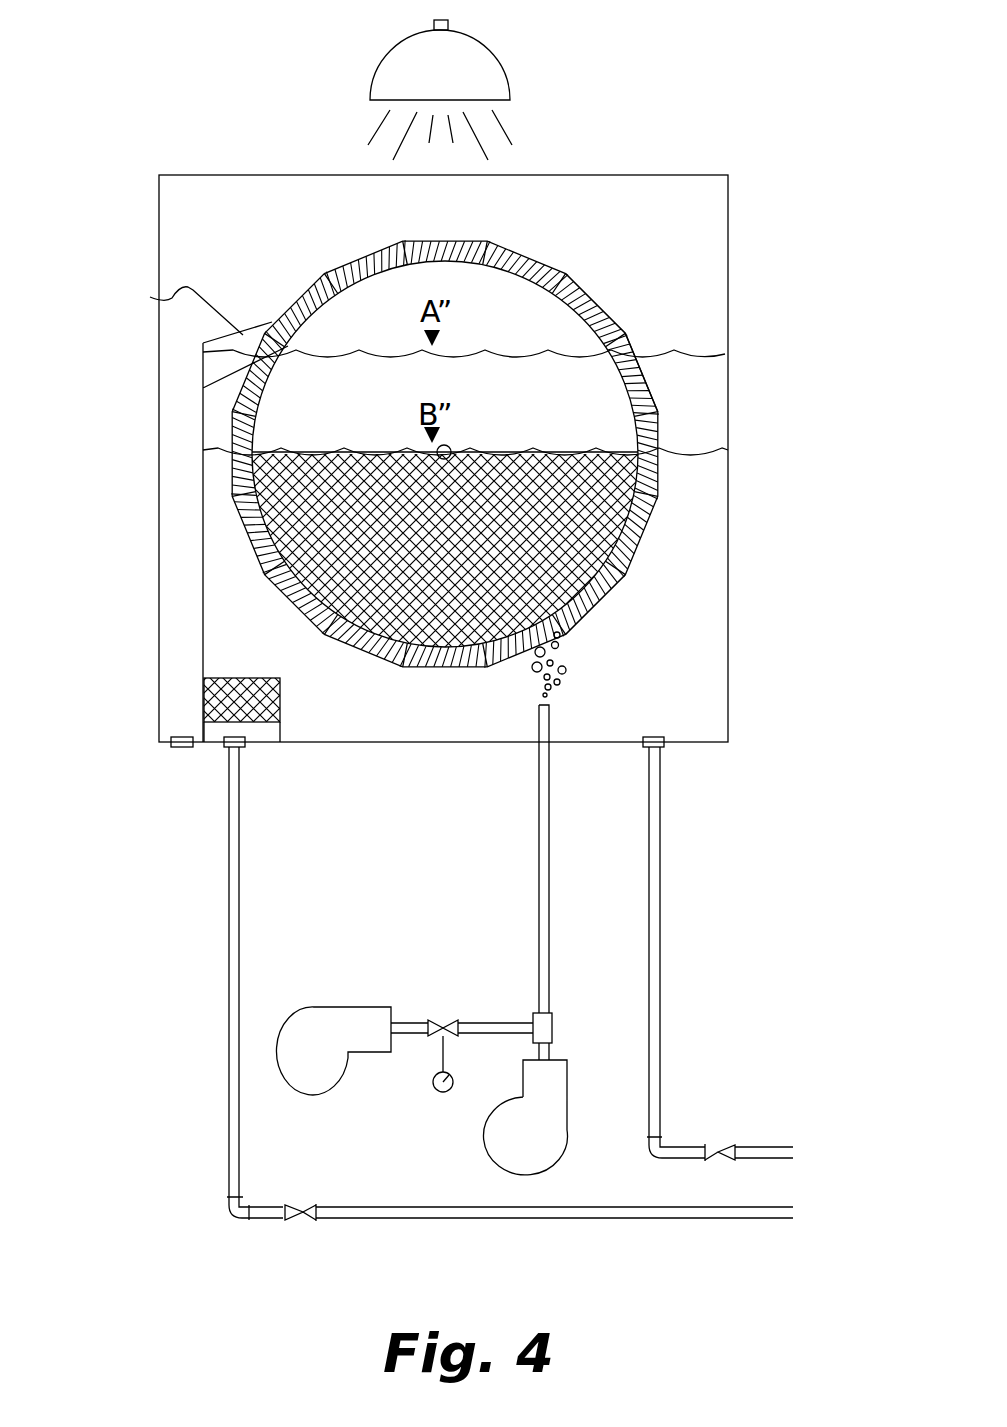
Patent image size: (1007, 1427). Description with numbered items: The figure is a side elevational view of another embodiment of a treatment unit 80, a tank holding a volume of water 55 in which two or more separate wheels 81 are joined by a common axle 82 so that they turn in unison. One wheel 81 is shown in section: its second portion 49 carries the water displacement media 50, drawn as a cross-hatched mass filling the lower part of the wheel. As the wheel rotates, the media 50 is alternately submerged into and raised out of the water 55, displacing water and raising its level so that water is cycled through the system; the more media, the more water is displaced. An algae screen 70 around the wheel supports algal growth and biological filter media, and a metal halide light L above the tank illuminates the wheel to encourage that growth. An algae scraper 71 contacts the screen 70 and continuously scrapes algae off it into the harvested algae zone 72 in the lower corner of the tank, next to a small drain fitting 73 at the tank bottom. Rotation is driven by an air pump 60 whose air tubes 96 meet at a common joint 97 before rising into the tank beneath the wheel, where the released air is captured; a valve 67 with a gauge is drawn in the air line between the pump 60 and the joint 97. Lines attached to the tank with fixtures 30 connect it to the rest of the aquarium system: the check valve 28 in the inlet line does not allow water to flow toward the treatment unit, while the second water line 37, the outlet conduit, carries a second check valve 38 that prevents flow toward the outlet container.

The metal halide light L is at (516, 42).
The treatment unit 80 is at (728, 252).
The axle 82 is at (521, 422).
The algae screen 70 is at (530, 260).
The wheel 81 is at (585, 292).
The second portion 49 is at (583, 548).
The water displacement media 50 is at (457, 544).
The algae scraper 71 is at (150, 297).
The harvested algae zone 72 is at (200, 694).
The drain fitting 73 is at (178, 748).
The fixture 30 is at (240, 748).
The water 55 is at (661, 674).
The air tube 96 is at (549, 830).
The common joint 97 is at (552, 1030).
The valve 67 is at (440, 1020).
The air pump 60 is at (300, 1091).
The second water line 37 is at (400, 1220).
The check valve 28 is at (288, 1205).
The second check valve 38 is at (716, 1143).